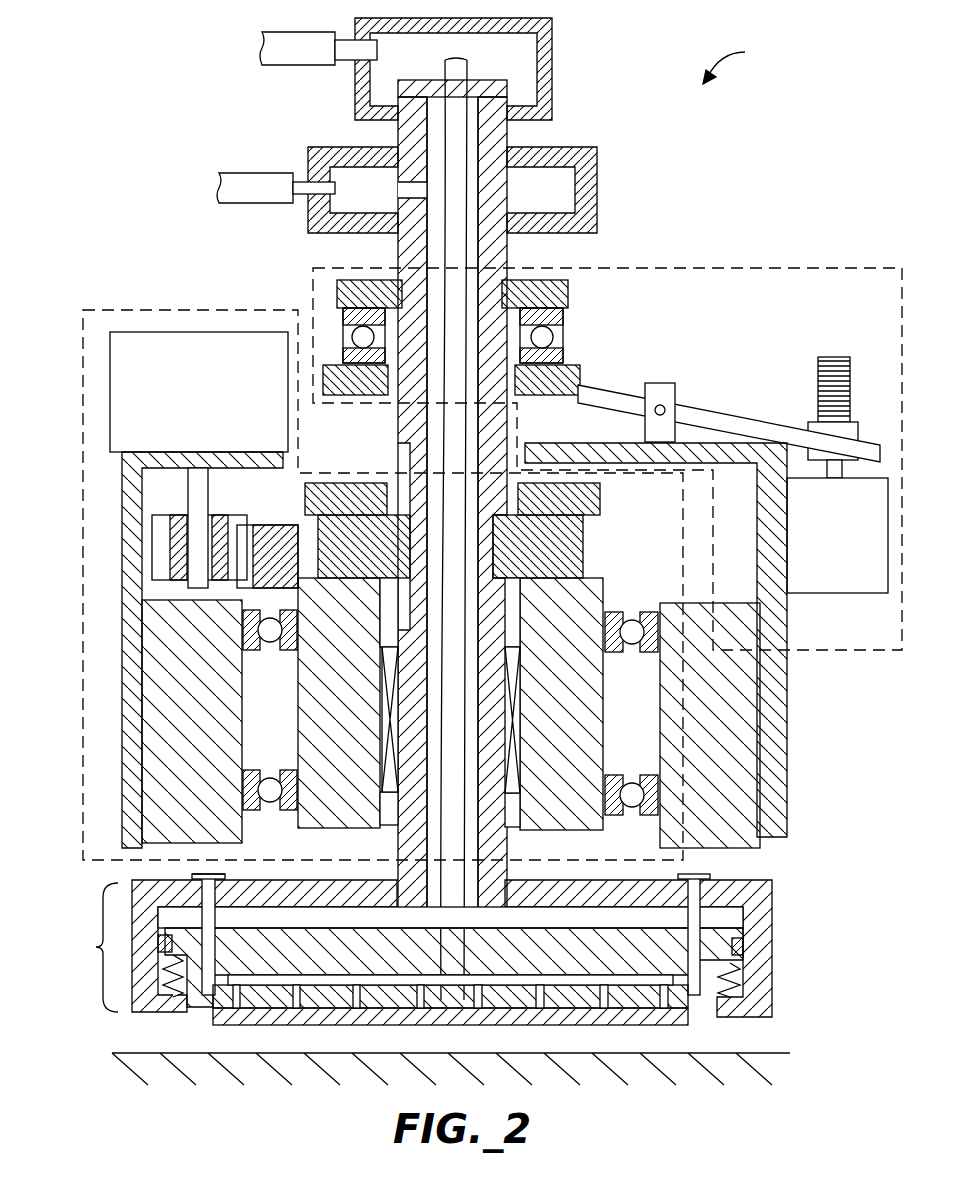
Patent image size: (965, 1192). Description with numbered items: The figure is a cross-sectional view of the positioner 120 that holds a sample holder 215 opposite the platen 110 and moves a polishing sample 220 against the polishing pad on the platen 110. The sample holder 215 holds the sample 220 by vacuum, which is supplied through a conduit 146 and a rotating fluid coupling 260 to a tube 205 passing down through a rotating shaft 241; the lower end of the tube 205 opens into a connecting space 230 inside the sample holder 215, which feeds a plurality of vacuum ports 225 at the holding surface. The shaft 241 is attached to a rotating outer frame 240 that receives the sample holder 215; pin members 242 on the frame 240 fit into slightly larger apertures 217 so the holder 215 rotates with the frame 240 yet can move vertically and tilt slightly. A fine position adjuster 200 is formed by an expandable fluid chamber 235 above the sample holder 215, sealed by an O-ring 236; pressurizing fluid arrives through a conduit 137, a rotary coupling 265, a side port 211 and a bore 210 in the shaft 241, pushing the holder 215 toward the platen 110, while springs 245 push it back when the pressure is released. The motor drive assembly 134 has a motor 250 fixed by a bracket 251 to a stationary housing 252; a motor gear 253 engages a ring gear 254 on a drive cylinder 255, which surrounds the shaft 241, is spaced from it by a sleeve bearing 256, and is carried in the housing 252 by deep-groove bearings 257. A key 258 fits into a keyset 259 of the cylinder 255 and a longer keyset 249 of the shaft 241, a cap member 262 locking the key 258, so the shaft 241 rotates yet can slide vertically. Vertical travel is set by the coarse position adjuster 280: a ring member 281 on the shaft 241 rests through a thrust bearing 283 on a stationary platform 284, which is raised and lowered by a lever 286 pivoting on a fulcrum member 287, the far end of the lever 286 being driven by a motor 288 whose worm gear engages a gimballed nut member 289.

The platen 110 is at (632, 1053).
The positioner 120 is at (742, 63).
The motor drive assembly 134 is at (185, 308).
The conduit 137 is at (255, 205).
The conduit 146 is at (300, 66).
The fine position adjuster 200 is at (85, 947).
The tube 205 is at (463, 62).
The bore 210 is at (430, 263).
The side port 211 is at (405, 192).
The sample holder 215 is at (717, 1012).
The apertures 217 is at (208, 995).
The polishing sample 220 is at (690, 1012).
The vacuum ports 225 is at (423, 1000).
The connecting space 230 is at (567, 982).
The expandable fluid chamber 235 is at (322, 915).
The O-ring 236 is at (158, 936).
The rotating outer frame 240 is at (772, 912).
The rotating shaft 241 is at (507, 247).
The pin members 242 is at (212, 874).
The springs 245 is at (172, 987).
The keyset 249 is at (400, 443).
The motor 250 is at (218, 394).
The bracket 251 is at (122, 548).
The stationary housing 252 is at (230, 734).
The motor gear 253 is at (215, 517).
The ring gear 254 is at (253, 527).
The drive cylinder 255 is at (308, 702).
The sleeve bearing 256 is at (390, 812).
The deep-groove bearings 257 is at (248, 652).
The key 258 is at (372, 522).
The keyset 259 is at (316, 530).
The rotating fluid coupling 260 is at (553, 70).
The cap member 262 is at (603, 492).
The rotary coupling 265 is at (560, 148).
The coarse position adjuster 280 is at (700, 268).
The ring member 281 is at (572, 287).
The thrust bearing 283 is at (563, 336).
The stationary platform 284 is at (583, 372).
The lever 286 is at (700, 406).
The fulcrum member 287 is at (662, 382).
The motor 288 is at (857, 550).
The nut member 289 is at (817, 413).